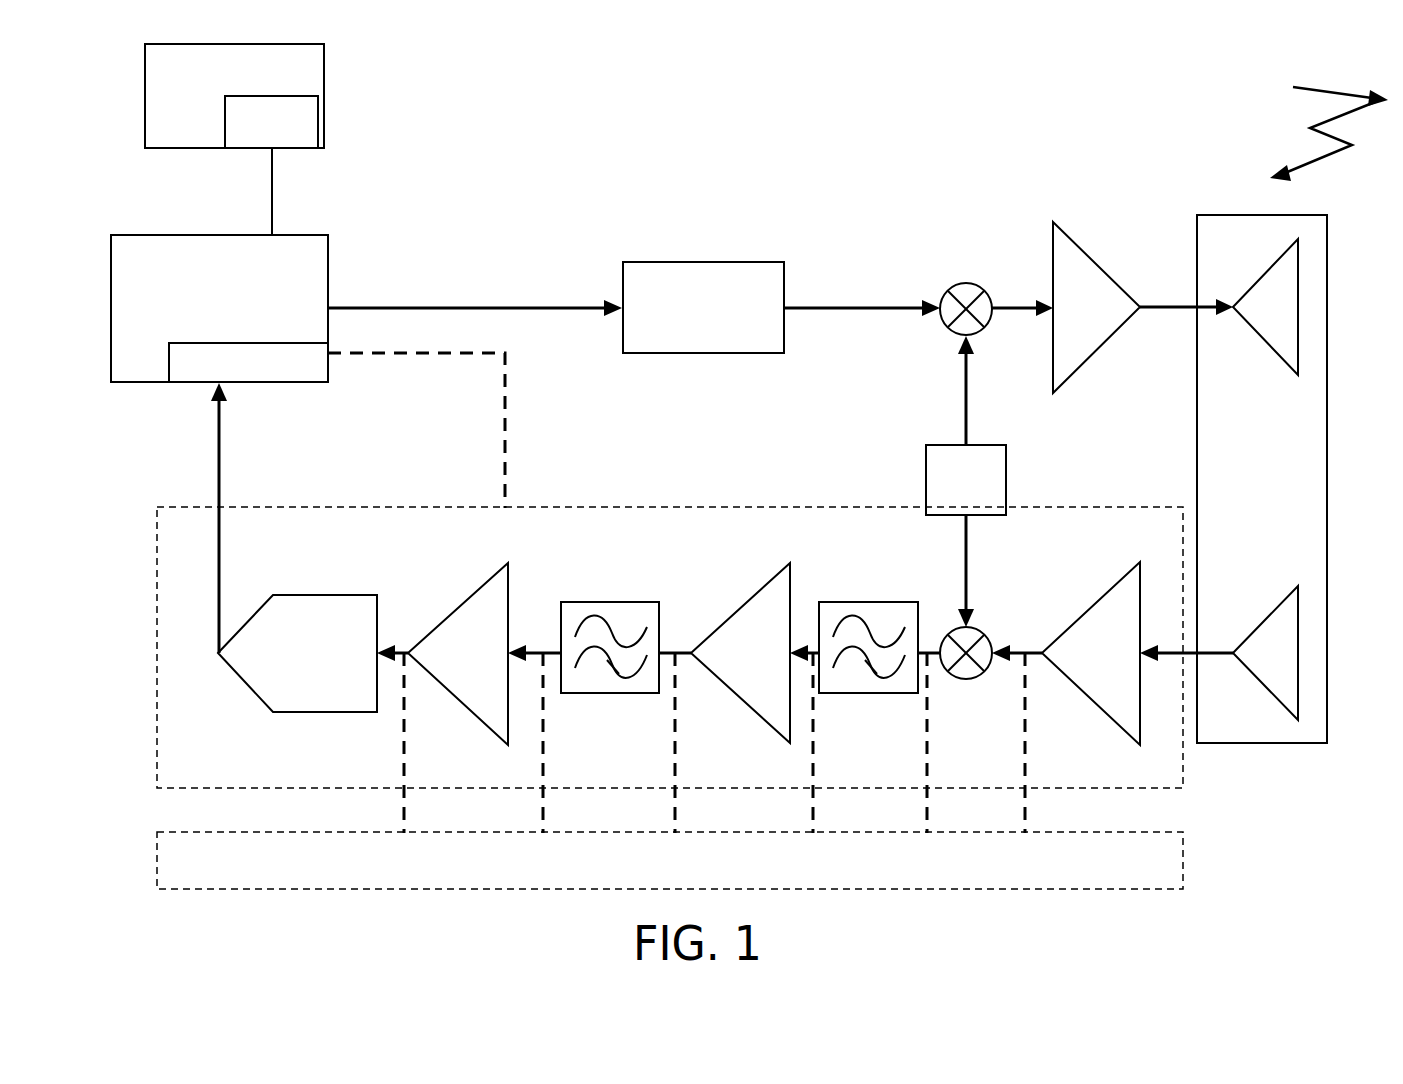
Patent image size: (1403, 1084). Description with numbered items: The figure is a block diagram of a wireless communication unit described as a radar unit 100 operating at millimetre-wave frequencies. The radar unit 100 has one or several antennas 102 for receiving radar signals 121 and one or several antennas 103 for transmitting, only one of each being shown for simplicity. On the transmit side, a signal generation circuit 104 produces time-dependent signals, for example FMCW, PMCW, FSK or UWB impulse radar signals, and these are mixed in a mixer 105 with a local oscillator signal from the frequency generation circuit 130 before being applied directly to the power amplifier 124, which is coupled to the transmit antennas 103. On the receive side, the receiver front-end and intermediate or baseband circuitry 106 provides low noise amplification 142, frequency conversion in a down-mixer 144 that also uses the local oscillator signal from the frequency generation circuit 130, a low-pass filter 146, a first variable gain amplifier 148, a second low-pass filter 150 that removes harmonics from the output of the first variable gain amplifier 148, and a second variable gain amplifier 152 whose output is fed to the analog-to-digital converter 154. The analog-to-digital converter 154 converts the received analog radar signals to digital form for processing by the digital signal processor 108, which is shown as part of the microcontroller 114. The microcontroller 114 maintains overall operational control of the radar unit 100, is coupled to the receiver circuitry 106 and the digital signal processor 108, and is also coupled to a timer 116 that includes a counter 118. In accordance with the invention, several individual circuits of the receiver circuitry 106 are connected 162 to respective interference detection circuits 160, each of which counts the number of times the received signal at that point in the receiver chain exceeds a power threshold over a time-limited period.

The radar unit 100 is at (585, 147).
The antennas for receiving radar signals 102 is at (1219, 451).
The antennas for transmitting radar signals 103 is at (1265, 479).
The signal generation circuit 104 is at (672, 262).
The mixer 105 is at (958, 284).
The receiver front-end and intermediate or baseband circuitry 106 is at (1183, 778).
The digital signal processor 108 is at (300, 383).
The microcontroller 114 is at (185, 234).
The timer 116 is at (207, 78).
The counter 118 is at (271, 122).
The radar signals 121 is at (1314, 122).
The power amplifier 124 is at (1053, 223).
The frequency generation circuit 130 is at (940, 446).
The low noise amplification 142 is at (1118, 584).
The down-mixer 144 is at (955, 680).
The low-pass filter 146 is at (858, 694).
The first variable gain amplifier 148 is at (770, 582).
The second low-pass filter 150 is at (622, 603).
The second variable gain amplifier 152 is at (488, 582).
The analog-to-digital converter 154 is at (315, 596).
The interference detection circuits 160 is at (1183, 860).
The connection to interference detection circuits 162 is at (403, 818).